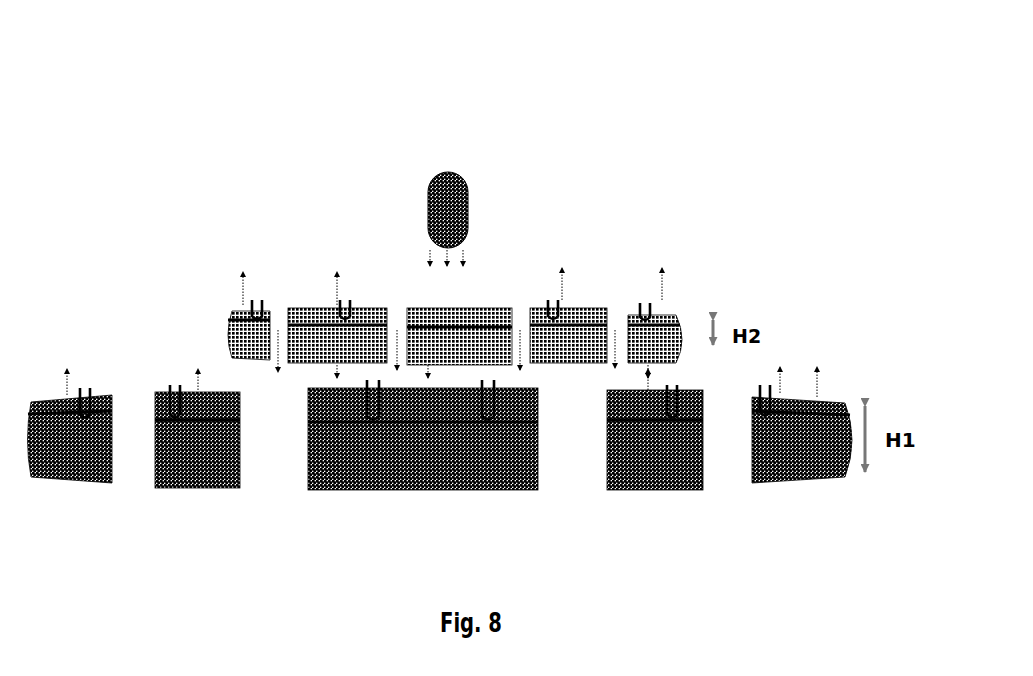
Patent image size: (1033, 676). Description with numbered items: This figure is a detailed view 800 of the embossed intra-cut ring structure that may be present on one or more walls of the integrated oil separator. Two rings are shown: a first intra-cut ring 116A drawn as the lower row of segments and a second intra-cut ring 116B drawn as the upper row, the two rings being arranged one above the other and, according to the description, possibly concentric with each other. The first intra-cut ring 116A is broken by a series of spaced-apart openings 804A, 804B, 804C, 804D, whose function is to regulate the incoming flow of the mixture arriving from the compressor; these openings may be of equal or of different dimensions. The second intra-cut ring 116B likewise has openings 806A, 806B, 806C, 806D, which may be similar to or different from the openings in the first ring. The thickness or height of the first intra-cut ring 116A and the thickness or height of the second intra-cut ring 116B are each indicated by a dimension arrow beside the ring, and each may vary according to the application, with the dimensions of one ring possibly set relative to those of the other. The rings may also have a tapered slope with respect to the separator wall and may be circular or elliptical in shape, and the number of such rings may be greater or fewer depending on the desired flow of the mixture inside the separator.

The light emitting device 800 is at (428, 82).
The first intra-cut ring 116A is at (488, 452).
The second intra-cut ring 116B is at (511, 319).
The opening 804A is at (130, 460).
The opening 804B is at (278, 460).
The opening 804C is at (570, 460).
The opening 804D is at (728, 460).
The opening 806A is at (322, 300).
The opening 806B is at (433, 302).
The opening 806C is at (553, 310).
The opening 806D is at (645, 310).